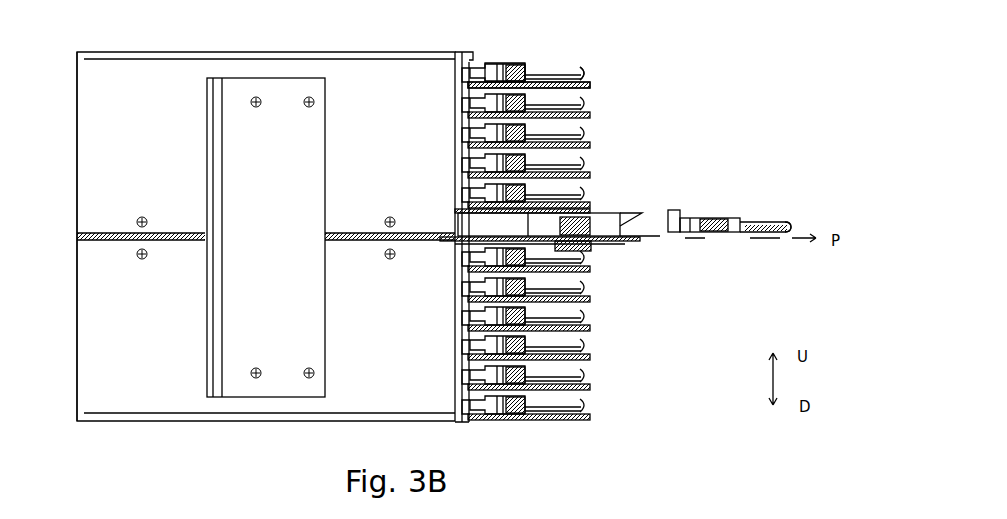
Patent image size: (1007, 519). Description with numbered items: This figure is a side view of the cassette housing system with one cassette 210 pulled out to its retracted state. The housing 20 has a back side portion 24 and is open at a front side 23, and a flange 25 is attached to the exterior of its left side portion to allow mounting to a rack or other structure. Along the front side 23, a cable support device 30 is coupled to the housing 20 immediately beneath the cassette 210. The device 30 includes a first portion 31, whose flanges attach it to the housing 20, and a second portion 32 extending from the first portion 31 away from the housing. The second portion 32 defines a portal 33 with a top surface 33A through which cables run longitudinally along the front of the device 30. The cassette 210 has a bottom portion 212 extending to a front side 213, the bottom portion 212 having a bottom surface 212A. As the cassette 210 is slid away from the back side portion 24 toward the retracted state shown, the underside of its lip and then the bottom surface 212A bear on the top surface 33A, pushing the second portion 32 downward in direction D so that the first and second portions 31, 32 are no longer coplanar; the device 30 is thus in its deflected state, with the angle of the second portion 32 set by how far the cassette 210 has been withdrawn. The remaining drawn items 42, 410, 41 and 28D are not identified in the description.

The housing 20 is at (172, 66).
The back side portion 24 is at (77, 113).
The flange 25 is at (243, 90).
The front side 23 is at (466, 51).
The cable support device 30 is at (592, 79).
The first portion 31 is at (513, 82).
The second portion 32 is at (560, 84).
The portal 33 is at (582, 88).
The top surface 33A is at (553, 250).
The connector element 42 is at (560, 246).
The housing 410 is at (543, 247).
The bottom portion 212 is at (660, 244).
The bottom surface 212A is at (636, 243).
The cassette 210 is at (670, 212).
The cable 41 is at (786, 220).
The front side 213 is at (806, 226).
The guide 28D is at (738, 242).